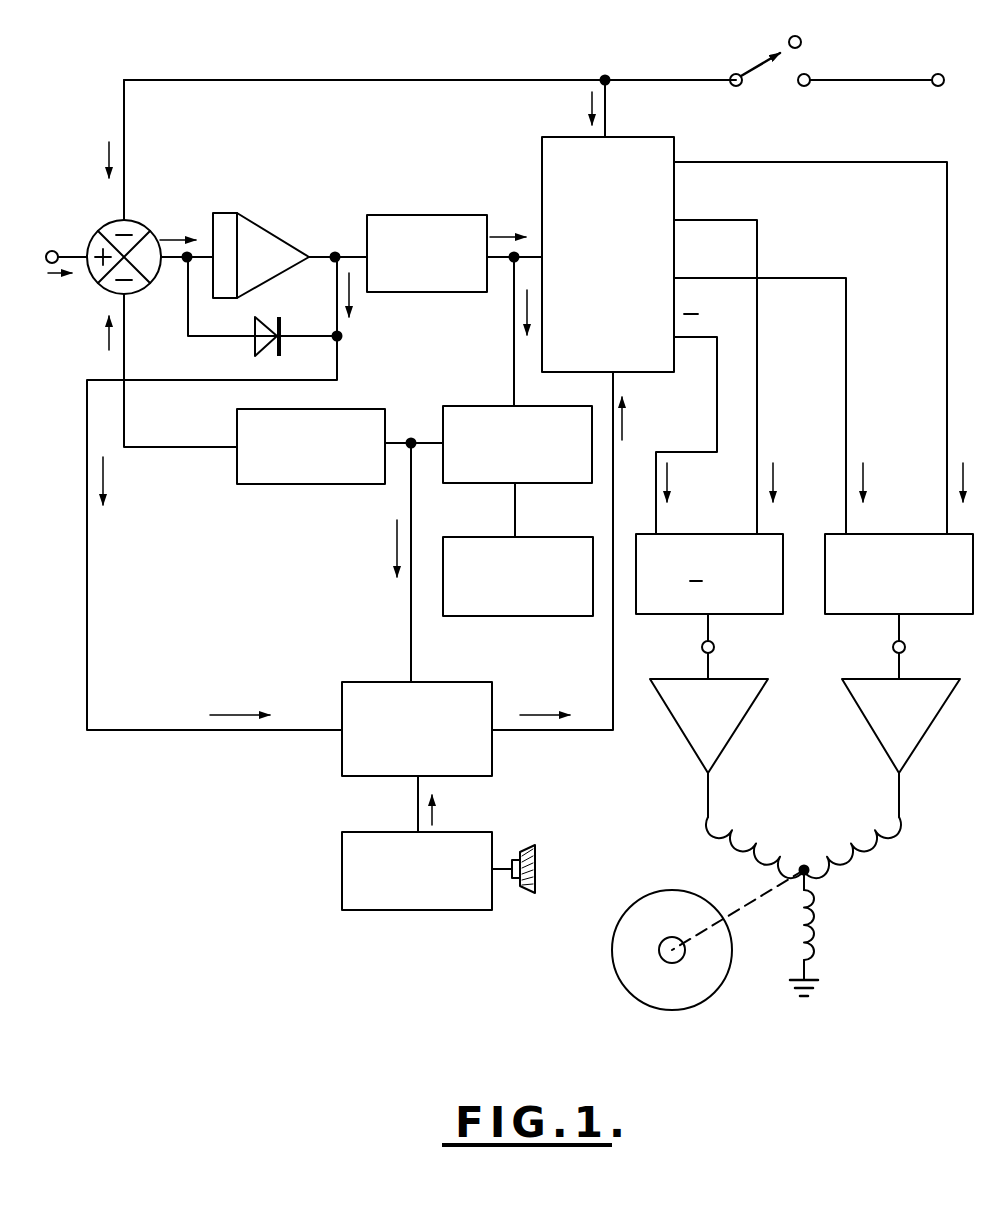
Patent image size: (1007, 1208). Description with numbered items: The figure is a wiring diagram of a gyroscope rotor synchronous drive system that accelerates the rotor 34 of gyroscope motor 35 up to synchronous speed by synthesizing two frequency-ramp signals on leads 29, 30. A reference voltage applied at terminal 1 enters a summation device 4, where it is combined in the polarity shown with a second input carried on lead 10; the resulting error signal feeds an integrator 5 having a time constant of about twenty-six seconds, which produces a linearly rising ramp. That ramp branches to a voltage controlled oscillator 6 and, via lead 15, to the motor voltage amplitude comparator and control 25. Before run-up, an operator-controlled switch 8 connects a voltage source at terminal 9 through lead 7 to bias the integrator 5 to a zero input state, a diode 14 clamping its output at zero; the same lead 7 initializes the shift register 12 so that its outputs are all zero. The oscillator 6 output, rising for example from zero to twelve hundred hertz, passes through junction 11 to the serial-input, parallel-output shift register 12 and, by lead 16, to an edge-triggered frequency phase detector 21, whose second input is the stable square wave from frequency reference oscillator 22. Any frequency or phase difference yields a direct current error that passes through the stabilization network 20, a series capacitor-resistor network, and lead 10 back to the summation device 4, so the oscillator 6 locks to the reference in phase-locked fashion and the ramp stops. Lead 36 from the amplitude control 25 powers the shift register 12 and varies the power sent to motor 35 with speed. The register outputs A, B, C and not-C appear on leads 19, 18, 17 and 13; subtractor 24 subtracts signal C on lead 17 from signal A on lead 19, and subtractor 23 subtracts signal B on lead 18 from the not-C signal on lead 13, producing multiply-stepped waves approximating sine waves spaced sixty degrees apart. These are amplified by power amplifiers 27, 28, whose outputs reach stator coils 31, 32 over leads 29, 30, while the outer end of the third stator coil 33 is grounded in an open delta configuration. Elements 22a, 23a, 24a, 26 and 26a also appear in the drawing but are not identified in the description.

The terminal 1 is at (53, 252).
The summation device 4 is at (150, 228).
The integrator 5 is at (284, 190).
The voltage controlled oscillator 6 is at (425, 215).
The lead 7 is at (505, 78).
The switch 8 is at (764, 64).
The terminal 9 is at (938, 74).
The second input lead 10 is at (126, 350).
The junction 11 is at (511, 263).
The shift register 12 is at (641, 137).
The lead 13 is at (717, 411).
The diode 14 is at (281, 320).
The lead 15 is at (340, 340).
The electrical lead 16 is at (514, 372).
The lead 17 is at (759, 412).
The lead 18 is at (846, 336).
The lead 19 is at (947, 336).
The stabilization network 20 is at (308, 484).
The frequency phase detector 21 is at (450, 406).
The frequency reference oscillator 22 is at (562, 537).
The oscillator output line 22a is at (515, 518).
The subtractor 23 is at (706, 538).
The subtractor output terminal 23a is at (715, 648).
The subtractor 24 is at (896, 538).
The subtractor output terminal 24a is at (906, 648).
The motor voltage amplitude comparator and control 25 is at (362, 682).
The voltage reference 26 is at (342, 877).
The voltage reference output line 26a is at (416, 814).
The power amplifier 27 is at (735, 736).
The power amplifier 28 is at (926, 736).
The lead 29 is at (708, 804).
The lead 30 is at (901, 803).
The stator coil 31 is at (740, 848).
The stator coil 32 is at (865, 848).
The third stator coil 33 is at (812, 928).
The rotor 34 is at (706, 998).
The gyroscope motor 35 is at (882, 981).
The lead 36 is at (560, 730).